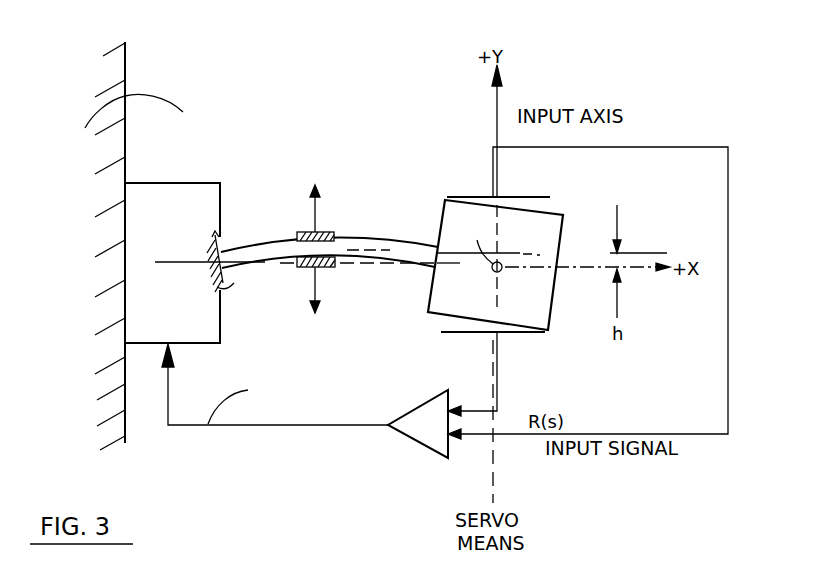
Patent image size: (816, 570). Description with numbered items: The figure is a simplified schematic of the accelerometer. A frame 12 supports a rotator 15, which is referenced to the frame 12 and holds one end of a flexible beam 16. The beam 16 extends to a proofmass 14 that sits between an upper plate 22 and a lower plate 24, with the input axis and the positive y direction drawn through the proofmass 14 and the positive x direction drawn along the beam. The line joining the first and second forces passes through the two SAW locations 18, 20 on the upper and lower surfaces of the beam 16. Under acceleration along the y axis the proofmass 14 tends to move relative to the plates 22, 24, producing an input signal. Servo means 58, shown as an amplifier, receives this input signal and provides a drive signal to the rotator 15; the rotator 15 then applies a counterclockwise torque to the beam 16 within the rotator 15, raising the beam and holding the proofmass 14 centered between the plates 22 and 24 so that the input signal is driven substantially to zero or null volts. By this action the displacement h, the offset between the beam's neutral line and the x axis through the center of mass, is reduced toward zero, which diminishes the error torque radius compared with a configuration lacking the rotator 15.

The frame 12 is at (127, 147).
The proofmass 14 is at (483, 301).
The rotator 15 is at (183, 336).
The beam 16 is at (371, 250).
The SAW location 18 is at (310, 232).
The SAW location 20 is at (322, 266).
The plate 22 is at (527, 197).
The plate 24 is at (505, 334).
The servo means 58 is at (422, 428).